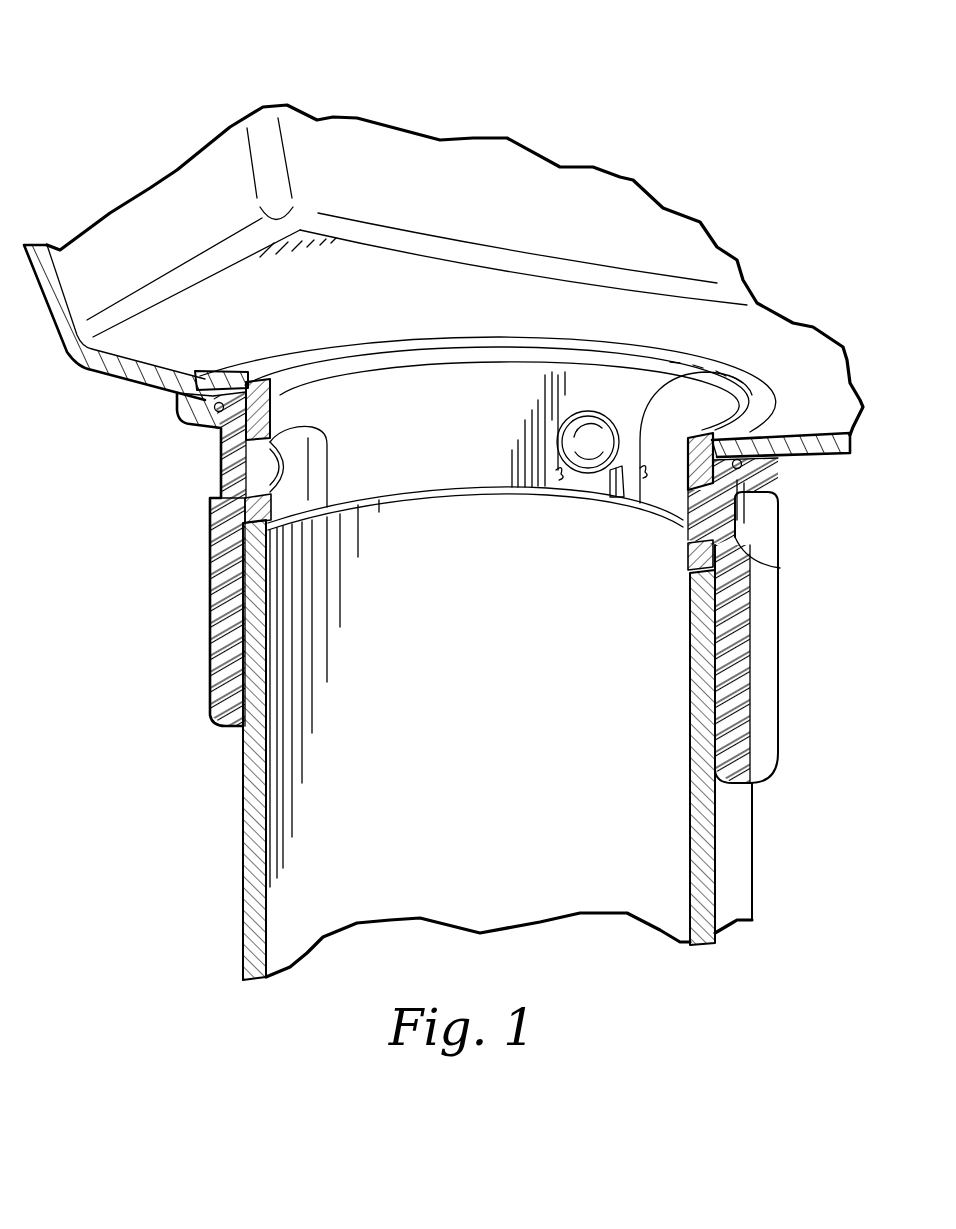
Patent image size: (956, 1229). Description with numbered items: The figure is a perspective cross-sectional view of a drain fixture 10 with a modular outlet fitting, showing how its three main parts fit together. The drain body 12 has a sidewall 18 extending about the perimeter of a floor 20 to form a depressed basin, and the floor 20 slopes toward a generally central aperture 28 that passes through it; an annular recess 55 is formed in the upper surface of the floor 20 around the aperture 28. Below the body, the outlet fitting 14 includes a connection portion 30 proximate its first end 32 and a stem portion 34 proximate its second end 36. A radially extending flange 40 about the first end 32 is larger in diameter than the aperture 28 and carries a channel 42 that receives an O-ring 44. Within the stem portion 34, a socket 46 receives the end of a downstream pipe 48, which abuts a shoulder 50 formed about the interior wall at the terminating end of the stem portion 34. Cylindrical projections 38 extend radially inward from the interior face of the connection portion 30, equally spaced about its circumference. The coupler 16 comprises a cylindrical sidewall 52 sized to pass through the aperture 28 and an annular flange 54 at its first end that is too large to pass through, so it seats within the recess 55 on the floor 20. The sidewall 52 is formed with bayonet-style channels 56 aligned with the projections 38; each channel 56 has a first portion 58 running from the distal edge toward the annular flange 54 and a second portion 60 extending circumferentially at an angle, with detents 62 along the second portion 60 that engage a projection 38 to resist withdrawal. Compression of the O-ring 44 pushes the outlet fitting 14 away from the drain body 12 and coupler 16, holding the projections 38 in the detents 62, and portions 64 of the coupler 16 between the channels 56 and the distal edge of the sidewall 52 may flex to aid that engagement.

The drain fixture 10 is at (703, 113).
The drain body 12 is at (362, 203).
The outlet fitting 14 is at (210, 635).
The coupler 16 is at (573, 345).
The sidewall 18 is at (168, 210).
The floor 20 is at (345, 300).
The aperture 28 is at (674, 344).
The connection portion 30 is at (747, 503).
The first end 32 is at (760, 468).
The stem portion 34 is at (763, 680).
The second end 36 is at (757, 767).
The projections 38 is at (573, 443).
The flange 40 is at (190, 407).
The channel 42 is at (223, 410).
The O-ring 44 is at (226, 398).
The socket 46 is at (724, 717).
The pipe 48 is at (710, 840).
The shoulder 50 is at (750, 567).
The cylindrical sidewall 52 is at (447, 457).
The annular flange 54 is at (235, 372).
The annular recess 55 is at (210, 405).
The bayonet-style channels 56 is at (327, 467).
The first portion 58 is at (645, 480).
The second portion 60 is at (614, 418).
The detents 62 is at (607, 467).
The portions 64 is at (563, 477).